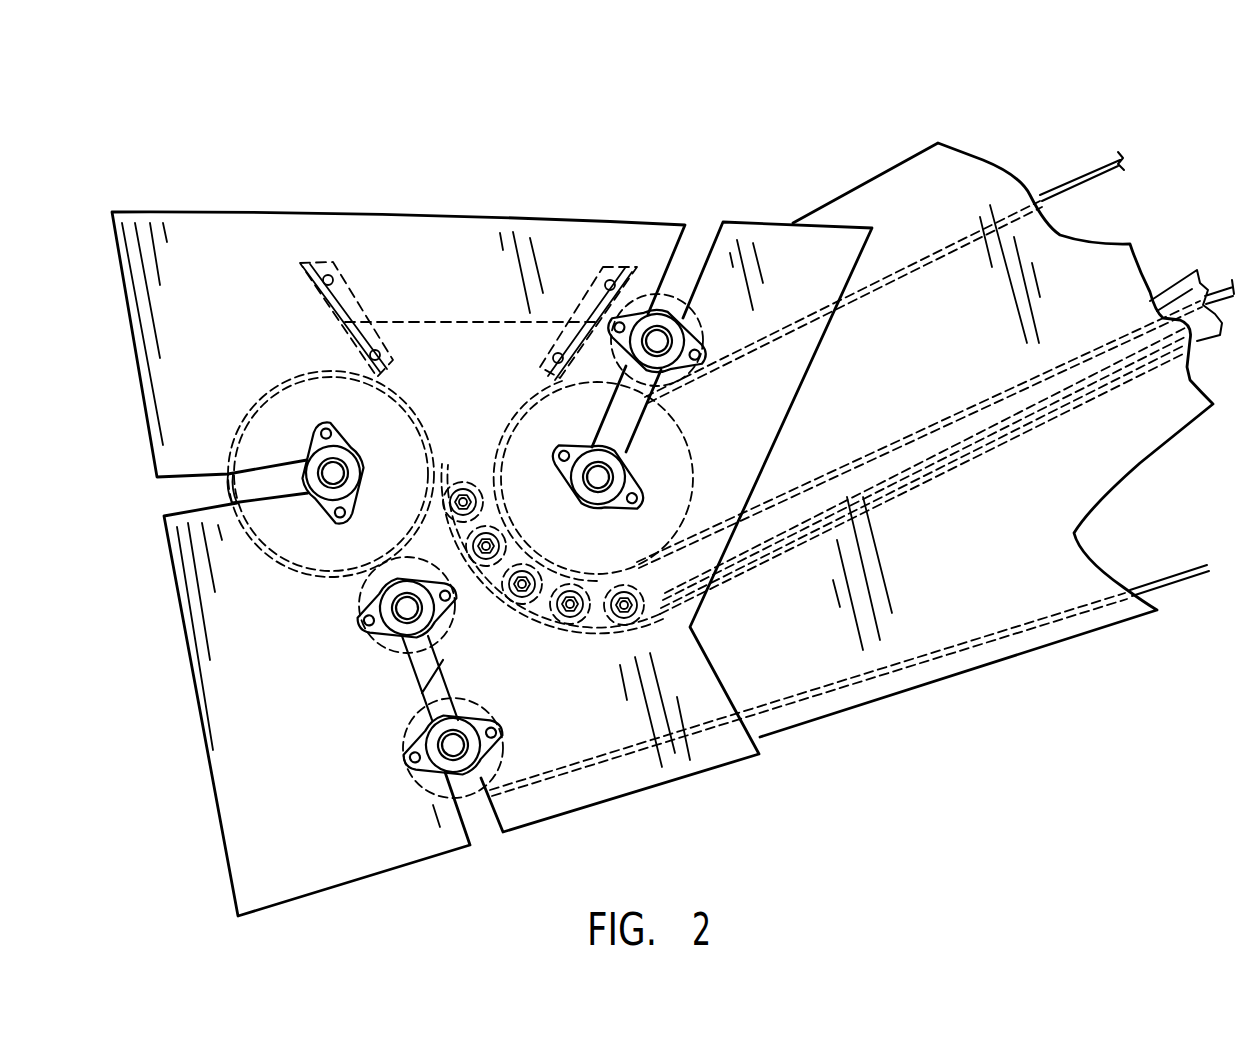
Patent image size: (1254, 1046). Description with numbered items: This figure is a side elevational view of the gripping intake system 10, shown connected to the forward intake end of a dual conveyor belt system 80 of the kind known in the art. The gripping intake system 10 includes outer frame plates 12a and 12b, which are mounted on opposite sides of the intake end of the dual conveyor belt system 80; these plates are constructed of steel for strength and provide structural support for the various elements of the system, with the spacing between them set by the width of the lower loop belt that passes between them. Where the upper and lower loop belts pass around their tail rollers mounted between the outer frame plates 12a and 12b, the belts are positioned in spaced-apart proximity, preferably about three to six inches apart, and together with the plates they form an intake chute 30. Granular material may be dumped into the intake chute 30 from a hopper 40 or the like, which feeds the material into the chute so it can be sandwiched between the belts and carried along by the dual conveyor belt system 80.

The gripping intake system 10 is at (567, 200).
The outer frame plate 12a is at (155, 211).
The outer frame plate 12b is at (395, 253).
The intake chute 30 is at (472, 397).
The hopper 40 is at (353, 282).
The dual conveyor belt system 80 is at (1067, 176).